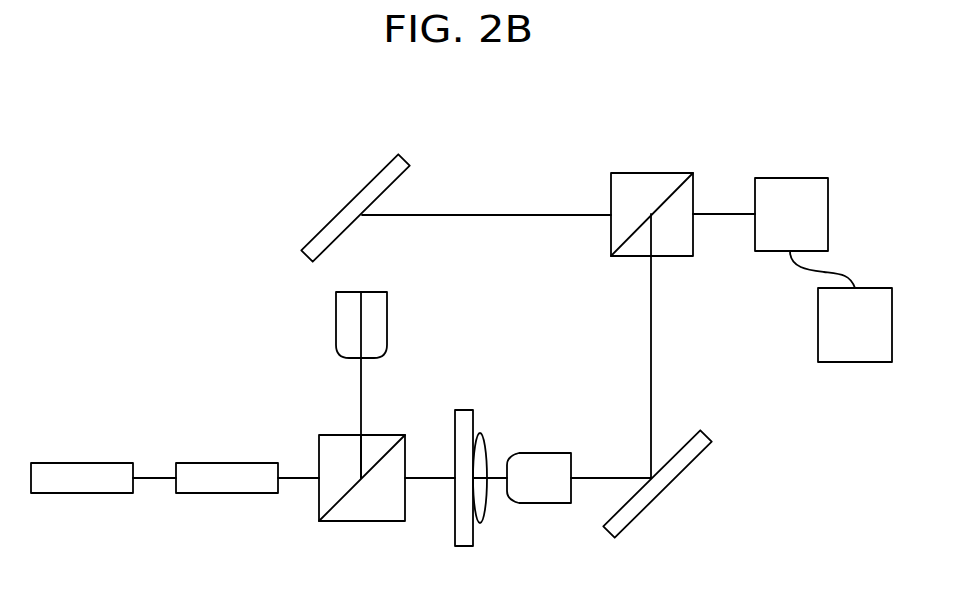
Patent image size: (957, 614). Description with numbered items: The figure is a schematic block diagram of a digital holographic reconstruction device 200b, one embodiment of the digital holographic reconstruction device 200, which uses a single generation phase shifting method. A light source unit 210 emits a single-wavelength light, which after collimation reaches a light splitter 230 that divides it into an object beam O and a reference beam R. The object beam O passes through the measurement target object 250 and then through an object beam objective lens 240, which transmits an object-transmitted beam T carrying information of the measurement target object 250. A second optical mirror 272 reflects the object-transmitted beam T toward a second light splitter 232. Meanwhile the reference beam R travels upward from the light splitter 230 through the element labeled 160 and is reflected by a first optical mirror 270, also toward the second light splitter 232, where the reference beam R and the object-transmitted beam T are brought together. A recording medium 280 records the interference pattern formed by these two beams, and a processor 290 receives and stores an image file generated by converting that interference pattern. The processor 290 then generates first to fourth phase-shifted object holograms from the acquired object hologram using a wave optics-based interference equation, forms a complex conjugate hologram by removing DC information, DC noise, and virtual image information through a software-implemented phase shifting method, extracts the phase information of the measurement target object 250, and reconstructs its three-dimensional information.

The digital holographic reconstruction device 200b is at (461, 310).
The digital holographic reconstruction device 200 is at (711, 101).
The light source unit 210 is at (82, 493).
The light splitter 230 is at (361, 521).
The object beam objective lens 240 is at (542, 503).
The measurement target object 250 is at (489, 400).
The second optical mirror 272 is at (662, 492).
The first optical mirror 270 is at (348, 200).
The spatial light modulator / camera 160 is at (387, 320).
The second light splitter 232 is at (651, 173).
The recording medium 280 is at (792, 178).
The processor 290 is at (855, 362).